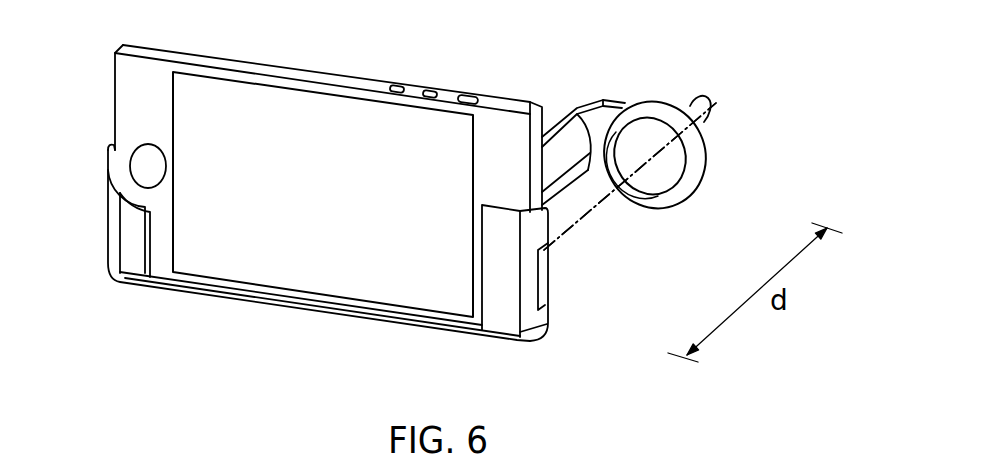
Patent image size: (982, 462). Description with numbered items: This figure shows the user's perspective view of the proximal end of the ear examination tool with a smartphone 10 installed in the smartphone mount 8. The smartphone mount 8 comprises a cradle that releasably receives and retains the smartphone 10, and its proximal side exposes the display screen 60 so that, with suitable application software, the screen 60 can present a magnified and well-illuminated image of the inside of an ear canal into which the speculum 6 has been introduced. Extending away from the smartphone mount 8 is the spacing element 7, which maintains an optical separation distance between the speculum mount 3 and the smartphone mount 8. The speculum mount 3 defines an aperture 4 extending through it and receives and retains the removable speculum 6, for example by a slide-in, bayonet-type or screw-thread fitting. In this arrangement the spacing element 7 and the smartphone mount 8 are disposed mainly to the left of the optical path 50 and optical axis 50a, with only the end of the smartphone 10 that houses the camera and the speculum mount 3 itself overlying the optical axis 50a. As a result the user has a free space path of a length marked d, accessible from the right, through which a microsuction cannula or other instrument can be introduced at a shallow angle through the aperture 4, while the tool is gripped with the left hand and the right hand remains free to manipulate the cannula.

The smartphone 10 is at (128, 97).
The screen 60 is at (290, 98).
The smartphone mount 8 is at (498, 312).
The spacing element 7 is at (567, 150).
The speculum 6 is at (713, 113).
The aperture 4 is at (670, 168).
The speculum mount 3 is at (688, 183).
The optical path 50 is at (583, 212).
The optical axis 50a is at (630, 176).